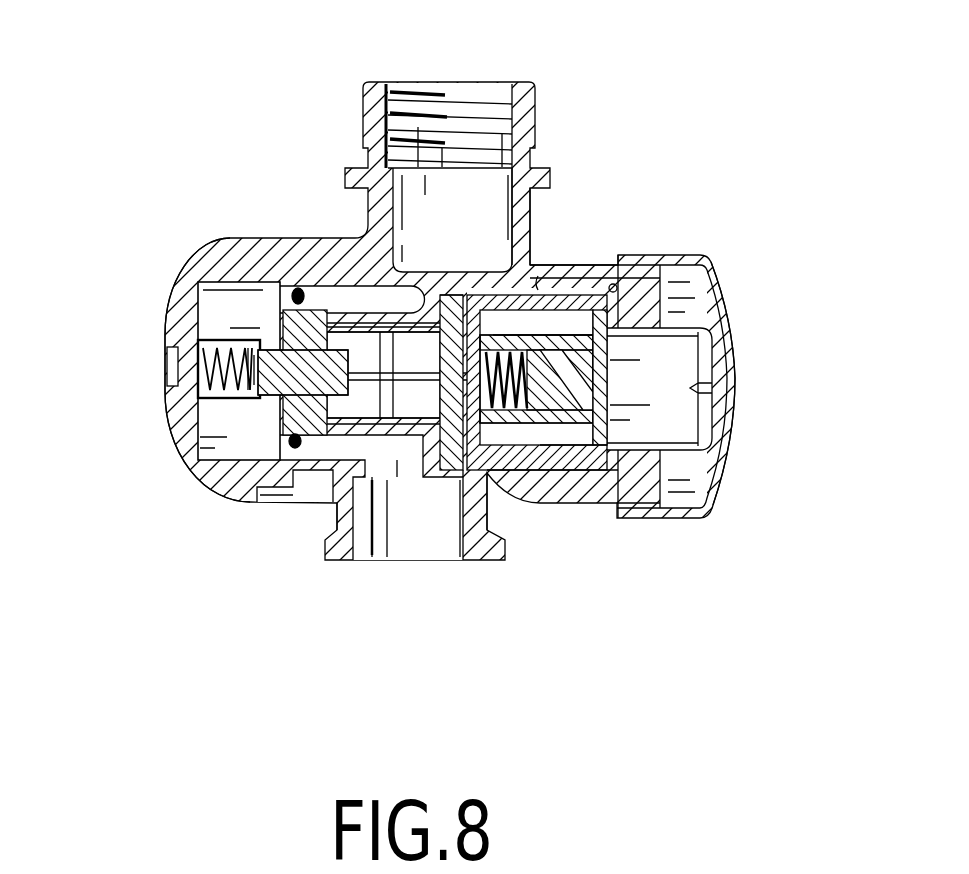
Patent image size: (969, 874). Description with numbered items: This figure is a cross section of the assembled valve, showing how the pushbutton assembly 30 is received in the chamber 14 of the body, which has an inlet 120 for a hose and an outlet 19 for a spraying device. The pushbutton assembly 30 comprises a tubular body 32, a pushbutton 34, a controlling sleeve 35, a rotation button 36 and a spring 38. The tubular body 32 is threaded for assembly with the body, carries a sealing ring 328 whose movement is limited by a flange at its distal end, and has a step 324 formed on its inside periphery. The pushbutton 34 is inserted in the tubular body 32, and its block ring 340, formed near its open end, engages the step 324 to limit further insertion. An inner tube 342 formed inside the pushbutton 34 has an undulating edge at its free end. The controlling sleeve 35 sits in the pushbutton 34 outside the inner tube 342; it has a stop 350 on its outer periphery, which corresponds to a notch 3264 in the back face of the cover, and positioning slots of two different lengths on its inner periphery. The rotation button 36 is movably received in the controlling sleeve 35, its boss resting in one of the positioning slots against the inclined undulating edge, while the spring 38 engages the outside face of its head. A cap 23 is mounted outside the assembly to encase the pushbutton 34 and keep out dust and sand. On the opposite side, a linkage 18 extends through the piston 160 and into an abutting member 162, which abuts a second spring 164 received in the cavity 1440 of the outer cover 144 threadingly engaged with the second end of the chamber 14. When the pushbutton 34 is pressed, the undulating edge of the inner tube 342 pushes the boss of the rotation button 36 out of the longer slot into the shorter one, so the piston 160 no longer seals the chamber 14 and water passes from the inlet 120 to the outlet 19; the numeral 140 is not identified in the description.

The chamber 14 is at (408, 300).
The outlet 19 is at (488, 88).
The notch 3264 is at (523, 265).
The pushbutton assembly 30 is at (792, 148).
The stop 350 is at (535, 277).
The block ring 340 is at (675, 273).
The cap 23 is at (733, 347).
The pushbutton 34 is at (720, 423).
The outer cover 144 is at (200, 263).
The cavity 1440 is at (220, 417).
The abutting member 162 is at (253, 350).
The second spring 164 is at (200, 367).
The piston 160 is at (282, 397).
The valve chamber 140 is at (356, 400).
The linkage 18 is at (383, 560).
The inlet 120 is at (403, 548).
The controlling sleeve 35 is at (460, 478).
The spring 38 is at (457, 570).
The tubular body 32 is at (537, 473).
The rotation button 36 is at (573, 460).
The inner tube 342 is at (600, 475).
The sealing ring 328 is at (610, 477).
The step 324 is at (637, 452).